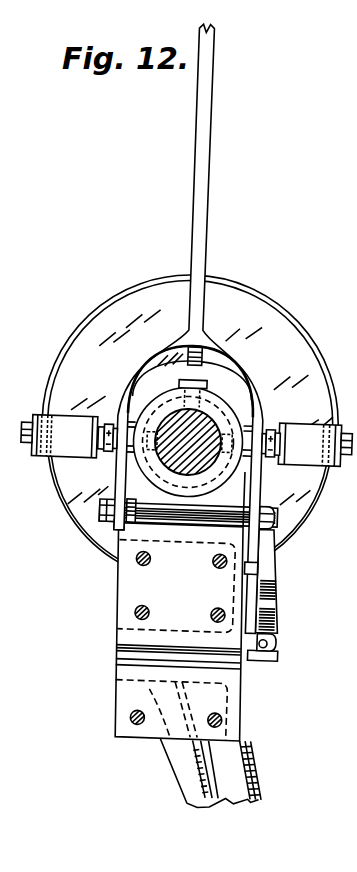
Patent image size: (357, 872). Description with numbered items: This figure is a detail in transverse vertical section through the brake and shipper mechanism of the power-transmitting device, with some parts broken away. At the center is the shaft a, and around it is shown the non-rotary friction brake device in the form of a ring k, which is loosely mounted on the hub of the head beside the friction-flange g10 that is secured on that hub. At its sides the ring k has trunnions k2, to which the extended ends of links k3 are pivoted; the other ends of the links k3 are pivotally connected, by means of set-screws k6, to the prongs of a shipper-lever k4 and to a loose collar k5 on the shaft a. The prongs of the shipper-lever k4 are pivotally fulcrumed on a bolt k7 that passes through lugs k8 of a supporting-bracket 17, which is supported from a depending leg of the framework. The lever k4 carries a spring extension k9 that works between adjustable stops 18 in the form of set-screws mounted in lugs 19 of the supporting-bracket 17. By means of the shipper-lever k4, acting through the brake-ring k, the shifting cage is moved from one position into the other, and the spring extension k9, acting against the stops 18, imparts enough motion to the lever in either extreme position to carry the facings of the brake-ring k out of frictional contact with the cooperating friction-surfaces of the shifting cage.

The ring k is at (268, 319).
The trunnions k2 is at (27, 418).
The links k3 is at (328, 421).
The shipper-lever k4 is at (193, 285).
The loose collar k5 is at (162, 408).
The set-screws k6 is at (312, 430).
The bolt k7 is at (198, 525).
The lugs k8 is at (122, 530).
The spring extension k9 is at (283, 645).
The friction-flange g10 is at (292, 511).
The shaft a is at (219, 409).
The supporting-bracket 17 is at (136, 672).
The adjustable stops 18 is at (243, 631).
The lugs 19 is at (278, 652).